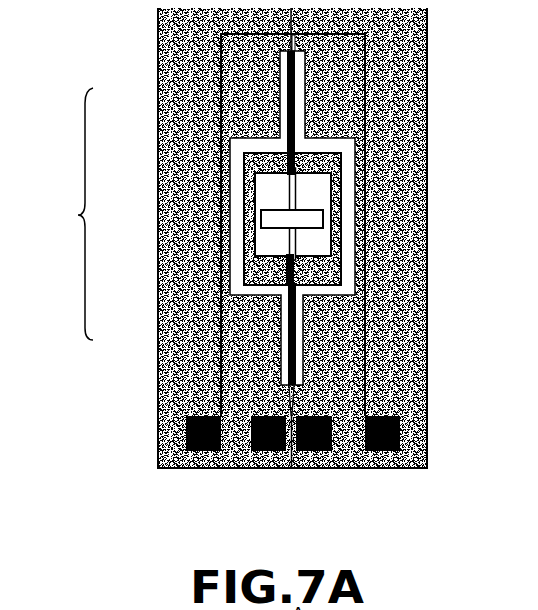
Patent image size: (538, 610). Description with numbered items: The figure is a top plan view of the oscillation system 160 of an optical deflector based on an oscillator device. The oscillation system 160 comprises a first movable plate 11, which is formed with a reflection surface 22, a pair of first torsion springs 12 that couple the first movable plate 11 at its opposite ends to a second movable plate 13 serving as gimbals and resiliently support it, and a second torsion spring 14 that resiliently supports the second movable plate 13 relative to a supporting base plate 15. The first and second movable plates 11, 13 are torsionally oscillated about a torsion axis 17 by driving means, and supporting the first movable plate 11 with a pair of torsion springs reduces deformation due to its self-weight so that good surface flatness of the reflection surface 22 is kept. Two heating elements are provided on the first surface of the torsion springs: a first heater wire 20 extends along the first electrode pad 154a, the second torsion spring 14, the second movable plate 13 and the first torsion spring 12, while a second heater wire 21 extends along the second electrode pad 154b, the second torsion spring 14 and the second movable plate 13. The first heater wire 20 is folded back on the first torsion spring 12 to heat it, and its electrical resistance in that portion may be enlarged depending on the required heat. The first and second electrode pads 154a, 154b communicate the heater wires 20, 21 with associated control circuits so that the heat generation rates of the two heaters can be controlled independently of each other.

The first movable plate 11 is at (270, 205).
The first torsion spring 12 is at (282, 200).
The second movable plate 13 is at (224, 290).
The second torsion spring 14 is at (272, 124).
The supporting base plate 15 is at (200, 63).
The torsion axis 17 is at (284, 460).
The first heater wire 20 is at (238, 266).
The second heater wire 21 is at (278, 158).
The reflection surface 22 is at (283, 209).
The first electrode pad 154a is at (305, 408).
The second electrode pad 154b is at (258, 443).
The oscillation system 160 is at (63, 214).